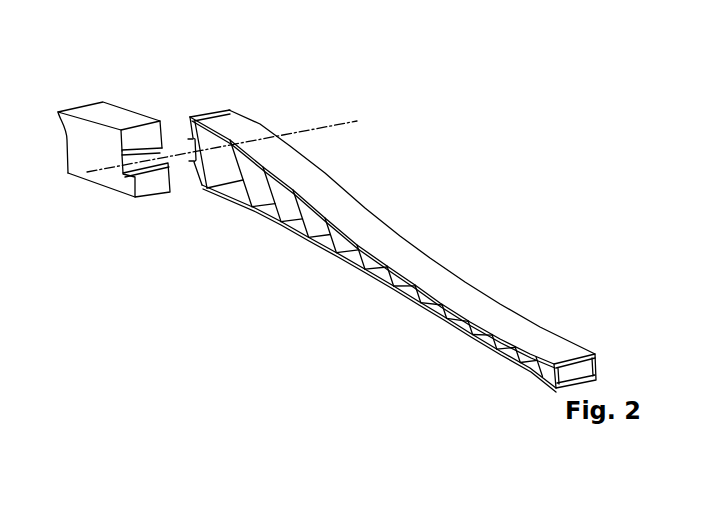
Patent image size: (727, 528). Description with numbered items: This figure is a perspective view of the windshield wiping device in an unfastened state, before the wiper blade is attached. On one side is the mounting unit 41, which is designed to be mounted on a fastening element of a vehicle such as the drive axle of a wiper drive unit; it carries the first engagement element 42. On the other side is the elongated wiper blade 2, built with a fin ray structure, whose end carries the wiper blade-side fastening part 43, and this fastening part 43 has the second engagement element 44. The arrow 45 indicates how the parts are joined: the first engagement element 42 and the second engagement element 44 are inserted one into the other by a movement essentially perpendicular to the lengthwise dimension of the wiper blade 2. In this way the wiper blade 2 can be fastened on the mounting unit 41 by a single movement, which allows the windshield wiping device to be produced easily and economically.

The wiper blade 2 is at (341, 214).
The mounting unit 41 is at (74, 170).
The first engagement element 42 is at (126, 176).
The fastening part 43 is at (226, 98).
The second engagement element 44 is at (190, 161).
The arrow 45 is at (302, 130).